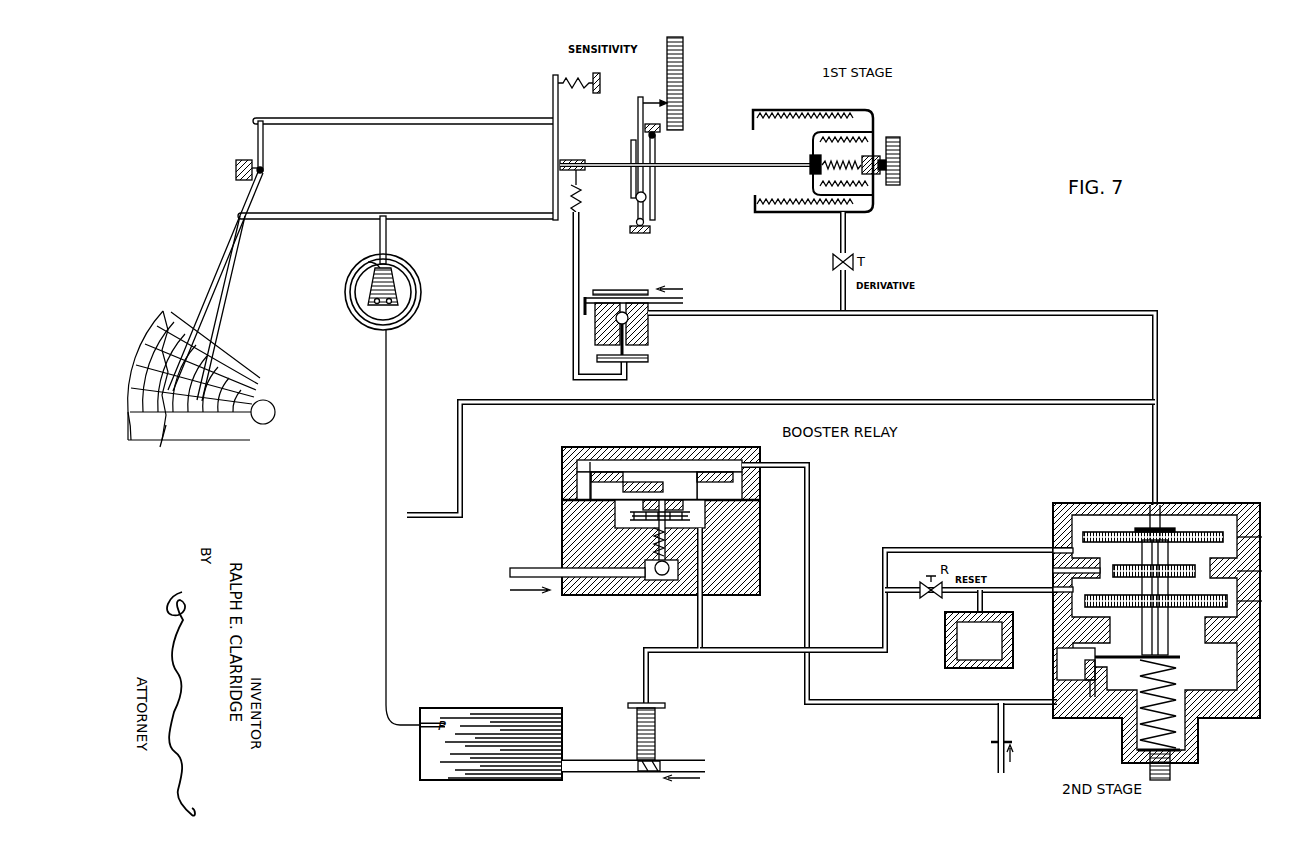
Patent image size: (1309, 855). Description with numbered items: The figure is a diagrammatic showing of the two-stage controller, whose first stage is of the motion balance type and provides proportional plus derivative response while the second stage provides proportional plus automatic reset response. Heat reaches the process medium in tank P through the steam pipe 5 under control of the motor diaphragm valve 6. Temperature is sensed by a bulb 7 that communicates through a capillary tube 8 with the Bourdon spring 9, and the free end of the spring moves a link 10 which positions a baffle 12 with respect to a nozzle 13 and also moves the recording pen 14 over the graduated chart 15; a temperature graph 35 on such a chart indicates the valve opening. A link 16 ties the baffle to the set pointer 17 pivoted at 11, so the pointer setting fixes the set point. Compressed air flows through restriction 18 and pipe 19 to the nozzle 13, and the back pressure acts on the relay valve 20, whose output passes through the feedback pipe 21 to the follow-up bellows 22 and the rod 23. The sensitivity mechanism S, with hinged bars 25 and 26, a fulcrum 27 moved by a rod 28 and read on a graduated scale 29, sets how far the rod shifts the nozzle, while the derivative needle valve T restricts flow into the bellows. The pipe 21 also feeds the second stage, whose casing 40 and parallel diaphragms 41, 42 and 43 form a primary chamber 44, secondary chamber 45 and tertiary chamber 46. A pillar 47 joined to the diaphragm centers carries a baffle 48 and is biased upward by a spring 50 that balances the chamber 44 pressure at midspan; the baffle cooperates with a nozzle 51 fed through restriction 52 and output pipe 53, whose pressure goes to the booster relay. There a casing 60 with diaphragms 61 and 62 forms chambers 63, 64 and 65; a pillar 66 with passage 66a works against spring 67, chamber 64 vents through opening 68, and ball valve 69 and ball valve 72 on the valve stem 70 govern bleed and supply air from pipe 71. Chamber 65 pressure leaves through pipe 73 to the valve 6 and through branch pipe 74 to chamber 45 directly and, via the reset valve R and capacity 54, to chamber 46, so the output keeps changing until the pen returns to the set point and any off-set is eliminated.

The steam pipe 5 is at (690, 760).
The motor diaphragm valve 6 is at (636, 726).
The bulb 7 is at (428, 720).
The capillary tube 8 is at (390, 578).
The Bourdon spring 9 is at (421, 284).
The link 10 is at (452, 212).
The pivot 11 is at (265, 170).
The baffle 12 is at (553, 162).
The nozzle 13 is at (570, 157).
The recording pen 14 is at (212, 290).
The graduated chart 15 is at (243, 379).
The link 16 is at (352, 118).
The set pointer 17 is at (257, 139).
The restriction 18 is at (589, 297).
The pipe 19 is at (573, 263).
The relay valve 20 is at (634, 289).
The feedback pipe 21 is at (765, 318).
The follow-up bellows 22 is at (867, 200).
The rod 23 is at (722, 161).
The hinged bar 25 is at (656, 176).
The hinged bar 26 is at (631, 150).
The fulcrum 27 is at (648, 201).
The rod 28 is at (638, 108).
The graduated scale 29 is at (684, 84).
The temperature graph 35 is at (162, 448).
The casing 40 is at (1255, 508).
The diaphragm 41 is at (1262, 537).
The diaphragm 42 is at (1262, 571).
The diaphragm 43 is at (1262, 601).
The primary chamber 44 is at (1153, 530).
The secondary chamber 45 is at (1155, 563).
The tertiary chamber 46 is at (1156, 593).
The pillar 47 is at (1163, 634).
The baffle 48 is at (1119, 655).
The spring 50 is at (1178, 672).
The nozzle 51 is at (1098, 668).
The restriction 52 is at (994, 743).
The output pipe 53 is at (998, 714).
The capacity 54 is at (960, 634).
The casing 60 is at (565, 447).
The diaphragm 61 is at (577, 471).
The diaphragm 62 is at (615, 500).
The chamber 63 is at (590, 468).
The chamber 64 is at (607, 478).
The chamber 65 is at (625, 518).
The pillar 66 is at (640, 472).
The passage 66a is at (661, 500).
The spring 67 is at (705, 513).
The opening 68 is at (577, 488).
The ball valve 69 is at (703, 472).
The valve stem 70 is at (656, 583).
The pipe 71 is at (541, 576).
The ball valve 72 is at (666, 583).
The pipe 73 is at (703, 618).
The branch pipe 74 is at (839, 648).